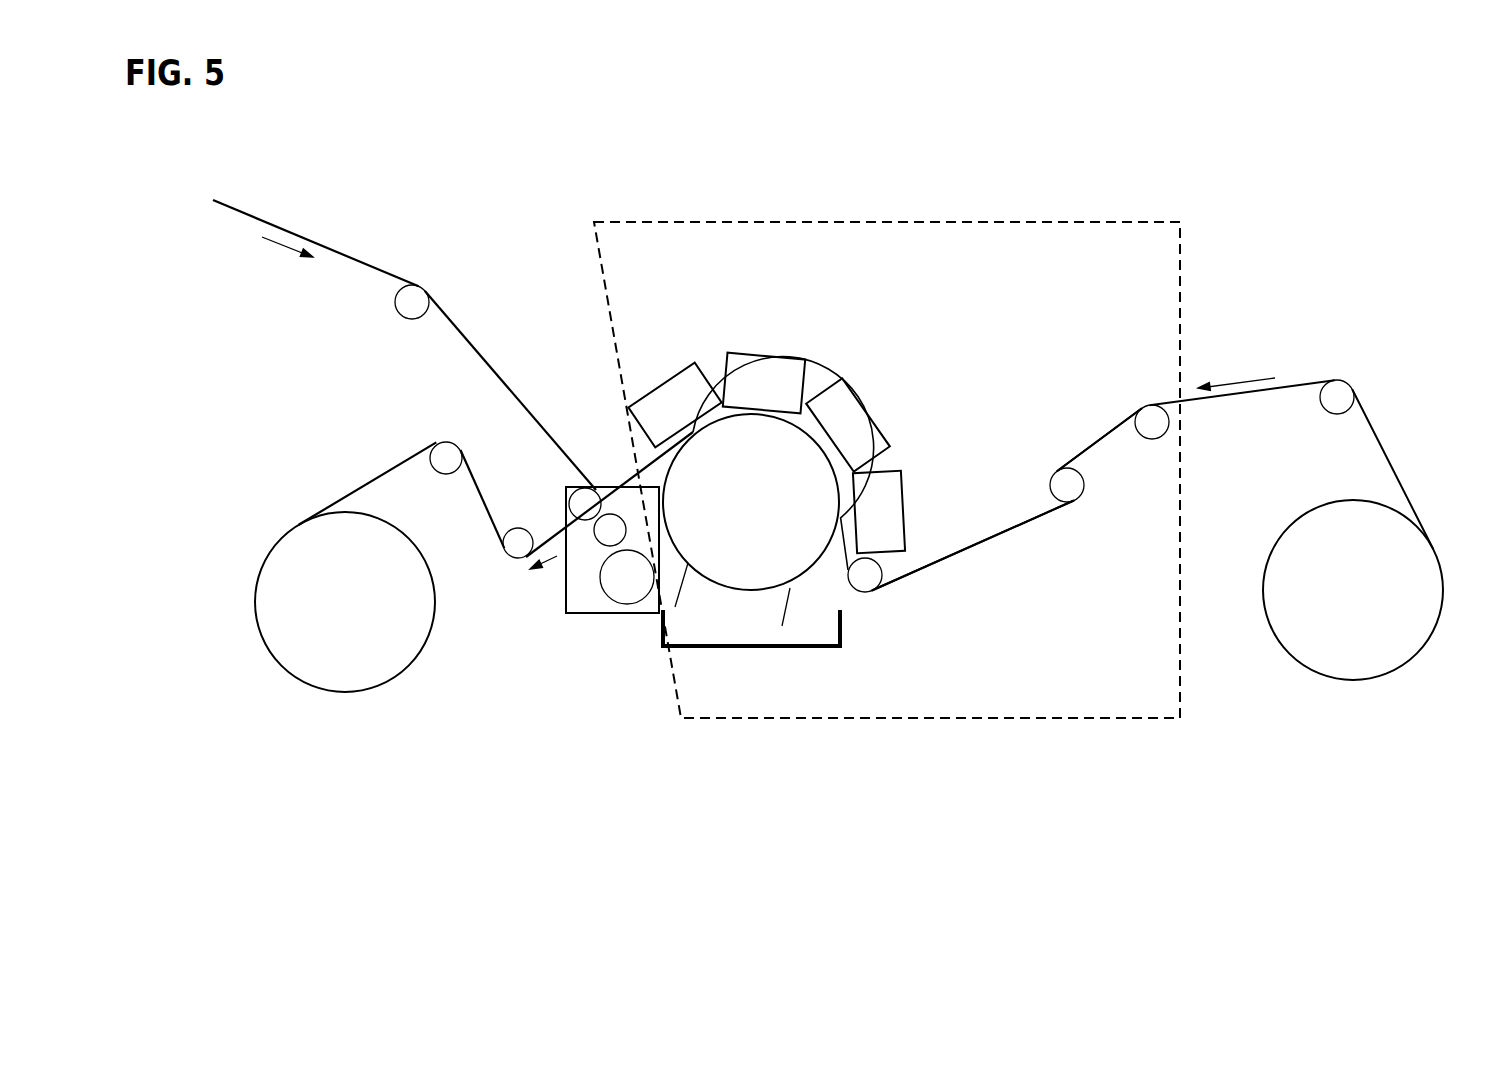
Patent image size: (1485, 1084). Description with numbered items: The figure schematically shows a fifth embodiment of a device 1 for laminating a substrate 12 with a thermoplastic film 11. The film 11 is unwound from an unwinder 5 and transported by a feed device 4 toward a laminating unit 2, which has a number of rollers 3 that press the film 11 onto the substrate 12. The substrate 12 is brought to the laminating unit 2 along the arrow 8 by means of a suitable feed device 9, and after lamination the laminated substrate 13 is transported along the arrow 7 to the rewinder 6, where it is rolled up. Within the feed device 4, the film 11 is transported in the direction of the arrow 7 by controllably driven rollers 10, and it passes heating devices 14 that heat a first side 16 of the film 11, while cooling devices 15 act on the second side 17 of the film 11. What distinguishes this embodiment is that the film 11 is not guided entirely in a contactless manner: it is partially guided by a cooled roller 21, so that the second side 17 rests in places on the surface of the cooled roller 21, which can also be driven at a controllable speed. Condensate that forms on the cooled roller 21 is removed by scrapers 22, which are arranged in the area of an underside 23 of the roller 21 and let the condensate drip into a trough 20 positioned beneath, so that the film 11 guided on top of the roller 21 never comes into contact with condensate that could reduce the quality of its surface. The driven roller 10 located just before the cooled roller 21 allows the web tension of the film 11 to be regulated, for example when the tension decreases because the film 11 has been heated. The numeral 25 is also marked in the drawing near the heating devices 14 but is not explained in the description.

The device 1 is at (675, 624).
The laminating unit 2 is at (630, 614).
The rollers 3 is at (692, 556).
The feed device 4 is at (1130, 222).
The unwinder 5 is at (1362, 653).
The rewinder 6 is at (355, 668).
The arrow 7 is at (548, 560).
The arrow 8 is at (285, 246).
The feed device 9 is at (455, 300).
The driven rollers 10 is at (582, 502).
The thermoplastic film 11 is at (1107, 460).
The substrate 12 is at (516, 395).
The laminated substrate 13 is at (397, 463).
The heating devices 14 is at (683, 367).
The cooling devices 15 is at (905, 490).
The first side 16 is at (1013, 523).
The second side 17 is at (1020, 528).
The trough 20 is at (772, 646).
The cooled roller 21 is at (742, 573).
The scrapers 22 is at (828, 550).
The underside 23 is at (718, 573).
The gap between heating devices 25 is at (805, 417).